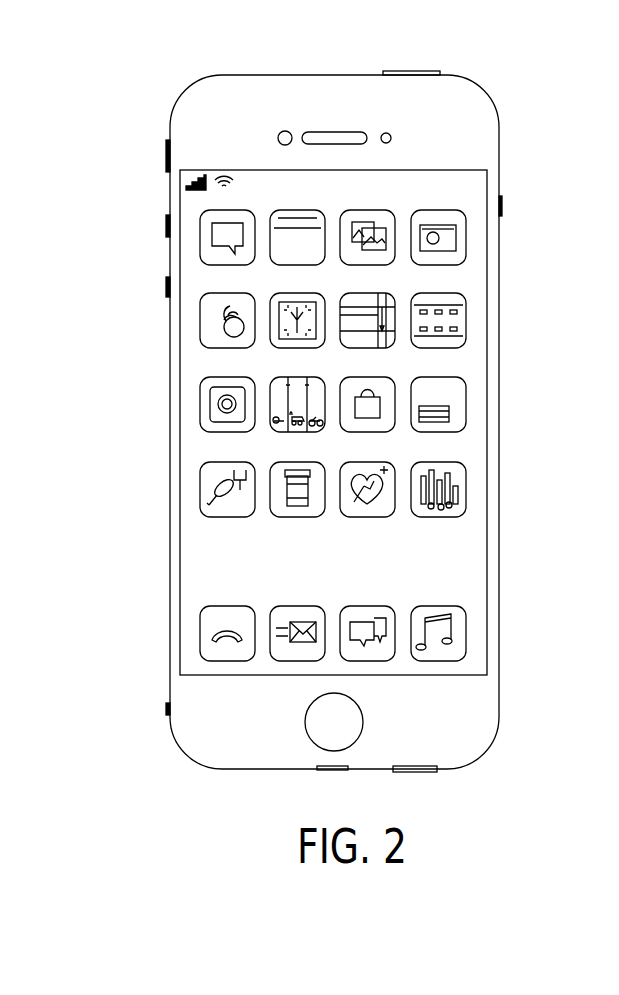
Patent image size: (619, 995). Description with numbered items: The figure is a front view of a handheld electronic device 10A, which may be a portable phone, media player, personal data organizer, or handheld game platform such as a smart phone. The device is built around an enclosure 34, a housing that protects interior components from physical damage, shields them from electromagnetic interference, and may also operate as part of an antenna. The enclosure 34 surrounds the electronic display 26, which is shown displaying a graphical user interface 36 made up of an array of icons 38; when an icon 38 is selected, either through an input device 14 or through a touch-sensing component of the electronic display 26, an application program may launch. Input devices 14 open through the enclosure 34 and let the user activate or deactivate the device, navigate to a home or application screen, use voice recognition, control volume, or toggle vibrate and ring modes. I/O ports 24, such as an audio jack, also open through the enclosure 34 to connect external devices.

The handheld electronic device 10A is at (131, 71).
The input devices 14 is at (412, 72).
The enclosure 34 is at (499, 126).
The electronic display 26 is at (487, 475).
The graphical user interface 36 is at (368, 418).
The icon 38 is at (445, 516).
The I/O ports 24 is at (232, 770).